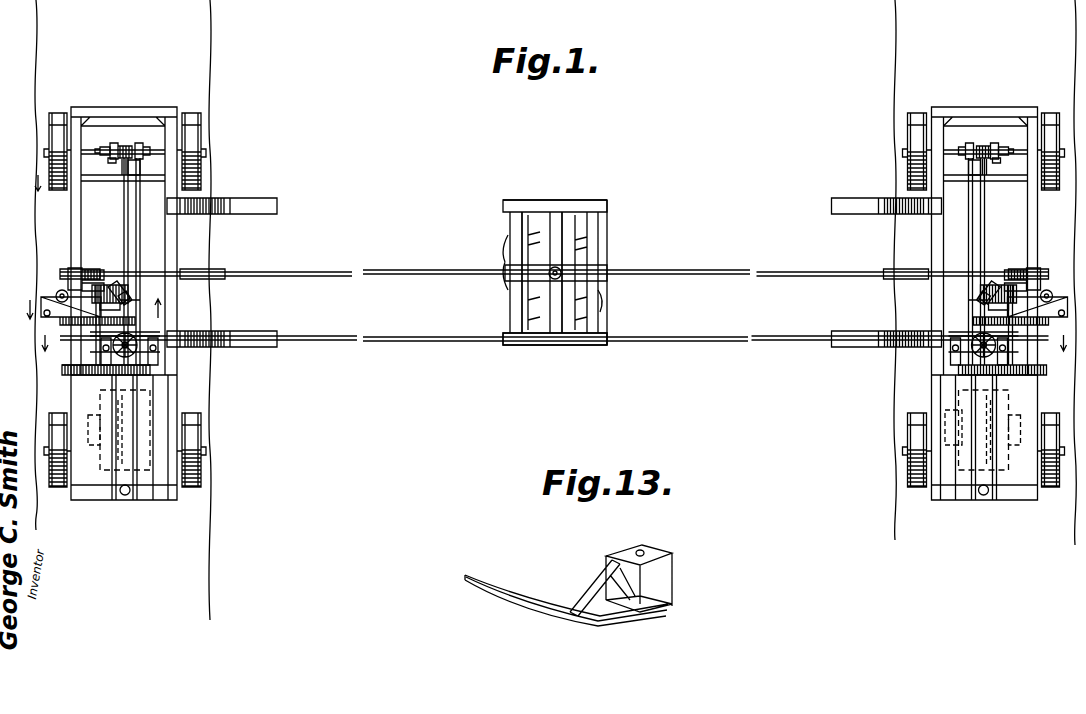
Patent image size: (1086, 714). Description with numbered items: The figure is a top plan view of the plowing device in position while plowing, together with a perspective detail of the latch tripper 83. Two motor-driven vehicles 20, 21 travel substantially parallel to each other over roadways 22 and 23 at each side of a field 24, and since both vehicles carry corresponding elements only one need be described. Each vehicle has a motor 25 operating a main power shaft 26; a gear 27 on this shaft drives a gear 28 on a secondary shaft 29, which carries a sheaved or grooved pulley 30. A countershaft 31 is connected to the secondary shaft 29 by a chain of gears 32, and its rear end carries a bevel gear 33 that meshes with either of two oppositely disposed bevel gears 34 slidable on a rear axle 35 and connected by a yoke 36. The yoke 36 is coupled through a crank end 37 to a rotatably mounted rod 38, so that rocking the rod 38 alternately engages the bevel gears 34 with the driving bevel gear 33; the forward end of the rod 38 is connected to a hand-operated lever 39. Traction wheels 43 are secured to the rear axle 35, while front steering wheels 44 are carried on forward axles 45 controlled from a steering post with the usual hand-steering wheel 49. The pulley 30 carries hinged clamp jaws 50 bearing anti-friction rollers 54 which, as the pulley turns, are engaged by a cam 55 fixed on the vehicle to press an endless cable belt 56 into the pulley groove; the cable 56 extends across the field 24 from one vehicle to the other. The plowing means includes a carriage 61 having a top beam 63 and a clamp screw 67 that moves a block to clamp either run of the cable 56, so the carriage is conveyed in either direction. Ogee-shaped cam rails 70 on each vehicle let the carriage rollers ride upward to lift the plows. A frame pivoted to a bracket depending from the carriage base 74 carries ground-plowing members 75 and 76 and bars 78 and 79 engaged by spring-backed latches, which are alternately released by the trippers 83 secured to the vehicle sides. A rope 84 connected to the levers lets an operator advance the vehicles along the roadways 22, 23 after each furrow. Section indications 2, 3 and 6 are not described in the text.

In FIG. 1, the section line 2 is at (553, 351).
In FIG. 1, the section line 3 is at (90, 302).
In FIG. 1, the section line 6 is at (209, 186).
In FIG. 1, the motor-driven vehicle 20 is at (179, 250).
In FIG. 1, the motor-driven vehicle 21 is at (932, 244).
In FIG. 1, the roadway 22 is at (102, 272).
In FIG. 1, the roadway 23 is at (999, 275).
In FIG. 1, the field 24 is at (538, 244).
In FIG. 1, the motor 25 is at (150, 410).
In FIG. 1, the main power shaft 26 is at (122, 378).
In FIG. 1, the gear 27 is at (150, 369).
In FIG. 1, the gear 28 is at (68, 375).
In FIG. 1, the secondary shaft 29 is at (80, 352).
In FIG. 1, the sheaved pulley 30 is at (92, 270).
In FIG. 1, the countershaft 31 is at (130, 233).
In FIG. 1, the chain of gears 32 is at (55, 297).
In FIG. 1, the bevel gear 33 is at (125, 160).
In FIG. 1, the bevel gears 34 is at (128, 146).
In FIG. 1, the rear axle 35 is at (150, 148).
In FIG. 1, the yoke 36 is at (110, 146).
In FIG. 1, the crank end 37 is at (140, 166).
In FIG. 1, the rod 38 is at (129, 203).
In FIG. 1, the hand-operated lever 39 is at (150, 335).
In FIG. 1, the traction wheels 43 is at (191, 113).
In FIG. 1, the steering wheels 44 is at (58, 487).
In FIG. 1, the forward axles 45 is at (203, 448).
In FIG. 1, the hand-steering wheel 49 is at (966, 395).
In FIG. 1, the clamp jaws 50 is at (66, 276).
In FIG. 1, the anti-friction rollers 54 is at (130, 292).
In FIG. 1, the cam 55 is at (125, 287).
In FIG. 1, the endless cable belt 56 is at (703, 276).
In FIG. 1, the carriage 61 is at (600, 243).
In FIG. 1, the top beam 63 is at (590, 275).
In FIG. 1, the clamp screw 67 is at (555, 281).
In FIG. 1, the cam rails 70 is at (251, 198).
In FIG. 1, the carriage base 74 is at (573, 345).
In FIG. 1, the ground-plowing members 75 is at (510, 235).
In FIG. 1, the ground-plowing members 76 is at (603, 325).
In FIG. 1, the bar 78 is at (535, 222).
In FIG. 1, the bar 79 is at (572, 222).
In FIG. 1, the latch tripper 83 is at (221, 279).
In FIG. 13, the latch tripper 83 is at (626, 620).
In FIG. 1, the rope 84 is at (430, 342).